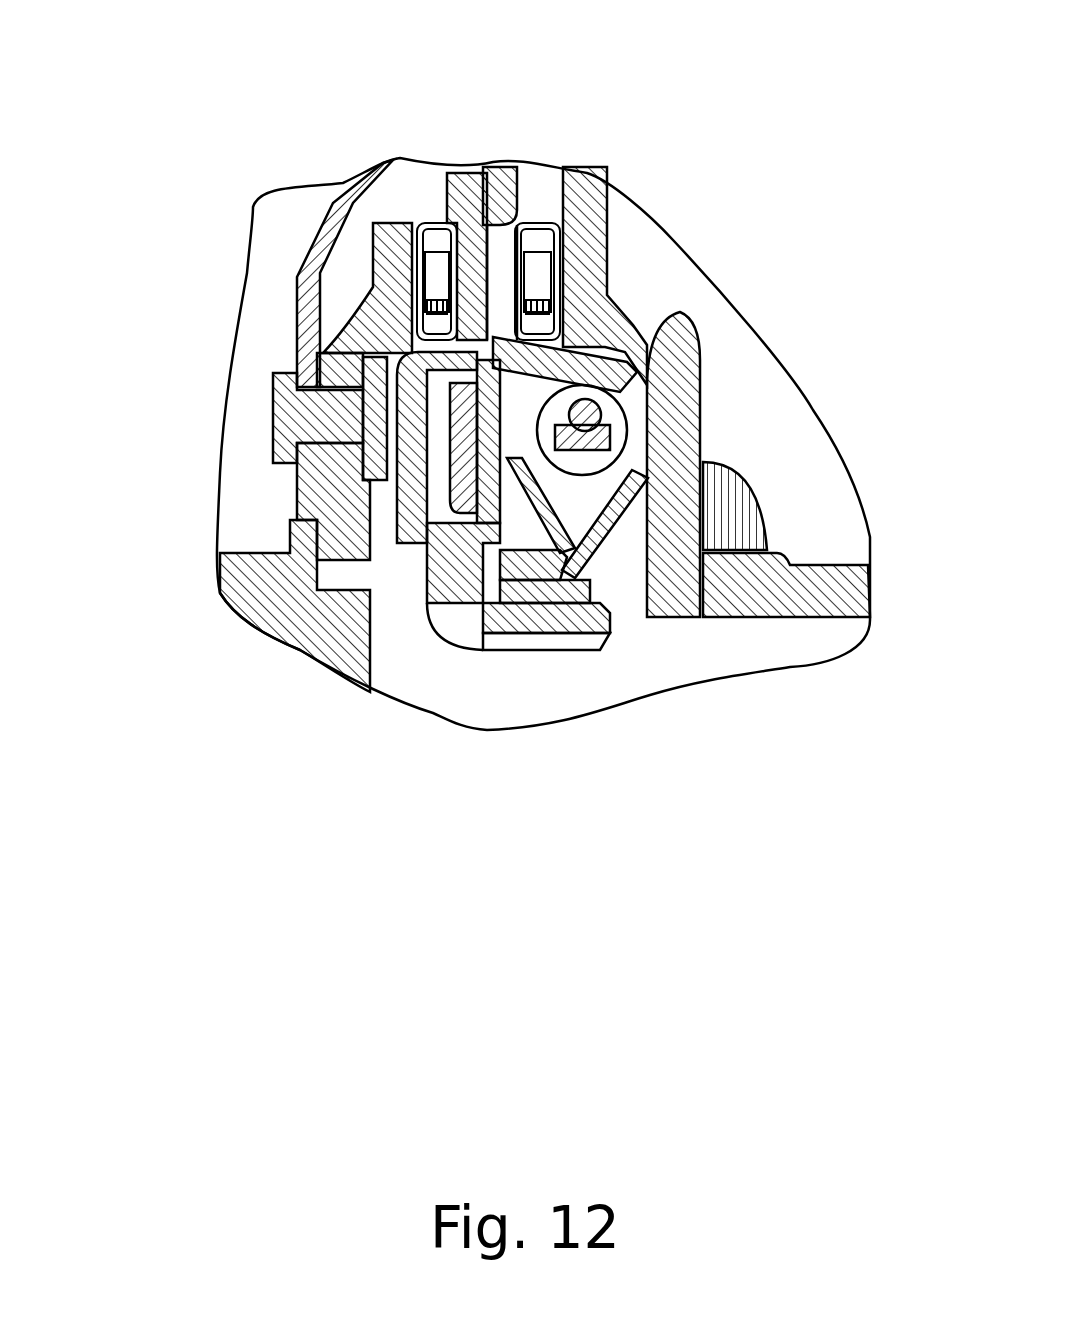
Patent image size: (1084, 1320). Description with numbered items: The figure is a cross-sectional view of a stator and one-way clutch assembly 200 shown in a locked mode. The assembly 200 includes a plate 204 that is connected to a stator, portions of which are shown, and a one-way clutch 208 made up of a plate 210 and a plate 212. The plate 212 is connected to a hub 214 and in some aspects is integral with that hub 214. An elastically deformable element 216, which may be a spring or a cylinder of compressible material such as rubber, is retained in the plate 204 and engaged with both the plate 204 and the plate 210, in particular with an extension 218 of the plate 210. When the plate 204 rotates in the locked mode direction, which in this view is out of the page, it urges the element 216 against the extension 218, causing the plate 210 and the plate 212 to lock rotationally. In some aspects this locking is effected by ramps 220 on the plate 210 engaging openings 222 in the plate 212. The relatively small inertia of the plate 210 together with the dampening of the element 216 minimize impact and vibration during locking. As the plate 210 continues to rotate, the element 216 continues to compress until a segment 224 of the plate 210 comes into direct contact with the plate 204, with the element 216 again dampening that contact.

The stator and one-way clutch assembly 200 is at (667, 187).
The plate 204 is at (615, 380).
The one-way clutch 208 is at (683, 453).
The plate 210 is at (487, 527).
The plate 212 is at (450, 577).
The hub 214 is at (563, 655).
The elastically deformable element 216 is at (617, 407).
The extension 218 is at (600, 437).
The ramp 220 is at (465, 457).
The opening 222 is at (437, 512).
The segment 224 is at (400, 222).